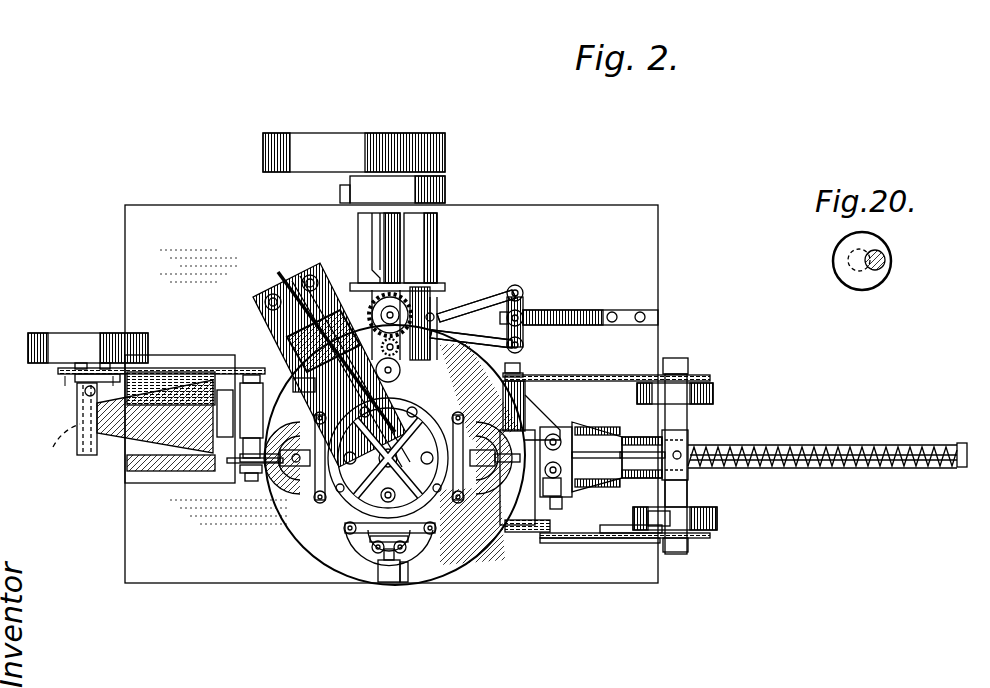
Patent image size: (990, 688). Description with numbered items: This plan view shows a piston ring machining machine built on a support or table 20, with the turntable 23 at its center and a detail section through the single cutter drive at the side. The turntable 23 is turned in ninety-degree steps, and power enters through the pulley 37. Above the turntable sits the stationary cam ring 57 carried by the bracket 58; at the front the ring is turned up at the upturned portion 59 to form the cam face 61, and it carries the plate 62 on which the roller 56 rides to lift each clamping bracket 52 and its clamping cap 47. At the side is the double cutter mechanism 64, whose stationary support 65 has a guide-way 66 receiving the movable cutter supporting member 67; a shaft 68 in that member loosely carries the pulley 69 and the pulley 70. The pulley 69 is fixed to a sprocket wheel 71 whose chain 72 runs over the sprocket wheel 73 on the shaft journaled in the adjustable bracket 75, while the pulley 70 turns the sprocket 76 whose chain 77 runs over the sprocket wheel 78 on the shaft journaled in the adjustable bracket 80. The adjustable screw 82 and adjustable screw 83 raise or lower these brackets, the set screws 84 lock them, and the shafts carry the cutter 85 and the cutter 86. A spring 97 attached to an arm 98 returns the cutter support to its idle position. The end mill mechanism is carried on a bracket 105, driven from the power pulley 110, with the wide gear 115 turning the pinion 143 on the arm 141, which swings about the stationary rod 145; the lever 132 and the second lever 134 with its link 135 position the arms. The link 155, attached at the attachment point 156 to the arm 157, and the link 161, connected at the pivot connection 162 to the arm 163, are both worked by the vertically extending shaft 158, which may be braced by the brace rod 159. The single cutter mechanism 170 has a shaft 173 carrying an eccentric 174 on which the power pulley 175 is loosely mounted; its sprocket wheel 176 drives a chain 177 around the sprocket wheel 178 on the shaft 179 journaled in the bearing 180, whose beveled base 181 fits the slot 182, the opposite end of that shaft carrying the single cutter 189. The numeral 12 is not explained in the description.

In FIG. 2, the support or table 20 is at (391, 394).
In FIG. 2, the pulley 37 is at (446, 142).
In FIG. 2, the power pulley 110 is at (446, 190).
In FIG. 2, the link 135 is at (379, 248).
In FIG. 2, the second lever 134 is at (420, 248).
In FIG. 2, the bracket 105 is at (437, 226).
In FIG. 2, the wide gear 115 is at (420, 288).
In FIG. 2, the pinion 143 is at (432, 297).
In FIG. 2, the arm 141 is at (418, 320).
In FIG. 2, the stationary rod 145 is at (372, 297).
In FIG. 2, the lever 132 is at (498, 285).
In FIG. 2, the pivot connection 162 is at (525, 275).
In FIG. 2, the arm 163 is at (524, 305).
In FIG. 2, the vertically extending shaft 158 is at (507, 318).
In FIG. 2, the arm 157 is at (503, 324).
In FIG. 2, the attachment point 156 is at (523, 345).
In FIG. 2, the link 155 is at (471, 345).
In FIG. 2, the link 161 is at (476, 303).
In FIG. 2, the brace rod 159 is at (610, 305).
In FIG. 2, the turntable 23 is at (300, 553).
In FIG. 2, the roller 56 is at (435, 608).
In FIG. 2, the cam ring 57 is at (330, 508).
In FIG. 2, the single cutter 189 is at (275, 470).
In FIG. 2, the cam face 61 is at (495, 456).
In FIG. 2, the bracket 58 is at (295, 384).
In FIG. 2, the upturned portion 59 is at (345, 528).
In FIG. 2, the plate 62 is at (370, 542).
In FIG. 2, the clamping cap 47 is at (386, 580).
In FIG. 2, the clamping bracket 52 is at (410, 570).
In FIG. 2, the frame 12 is at (400, 565).
In FIG. 2, the sprocket wheel 73 is at (522, 370).
In FIG. 2, the chain 72 is at (600, 375).
In FIG. 2, the adjustable bracket 75 is at (530, 400).
In FIG. 2, the sprocket wheel 71 is at (712, 378).
In FIG. 2, the pulley 69 is at (714, 393).
In FIG. 2, the double cutter mechanism 64 is at (688, 440).
In FIG. 2, the shaft 68 is at (690, 480).
In FIG. 2, the pulley 70 is at (718, 518).
In FIG. 2, the guide-way 66 is at (659, 518).
In FIG. 2, the sprocket 76 is at (700, 540).
In FIG. 2, the chain 77 is at (640, 542).
In FIG. 2, the spring 97 is at (830, 468).
In FIG. 2, the arm 98 is at (877, 468).
In FIG. 2, the adjustable screw 82 is at (580, 430).
In FIG. 2, the cutter 85 is at (556, 434).
In FIG. 2, the cutter 86 is at (597, 446).
In FIG. 2, the cutter supporting member 67 is at (572, 468).
In FIG. 2, the adjustable screw 83 is at (556, 509).
In FIG. 2, the set screws 84 is at (549, 496).
In FIG. 2, the sprocket wheel 78 is at (527, 532).
In FIG. 2, the adjustable bracket 80 is at (507, 533).
In FIG. 2, the stationary support 65 is at (624, 538).
In FIG. 2, the power pulley 175 is at (78, 338).
In FIG. 2, the chain 177 is at (176, 368).
In FIG. 2, the sprocket wheel 176 is at (60, 378).
In FIG. 2, the eccentric 174 is at (80, 393).
In FIG. 20, the eccentric 174 is at (886, 262).
In FIG. 2, the shaft 173 is at (56, 445).
In FIG. 20, the shaft 173 is at (850, 267).
In FIG. 2, the single cutter mechanism 170 is at (155, 416).
In FIG. 2, the slot 182 is at (180, 419).
In FIG. 2, the beveled base 181 is at (171, 468).
In FIG. 2, the bearing 180 is at (233, 420).
In FIG. 2, the sprocket wheel 178 is at (252, 375).
In FIG. 2, the shaft 179 is at (245, 470).